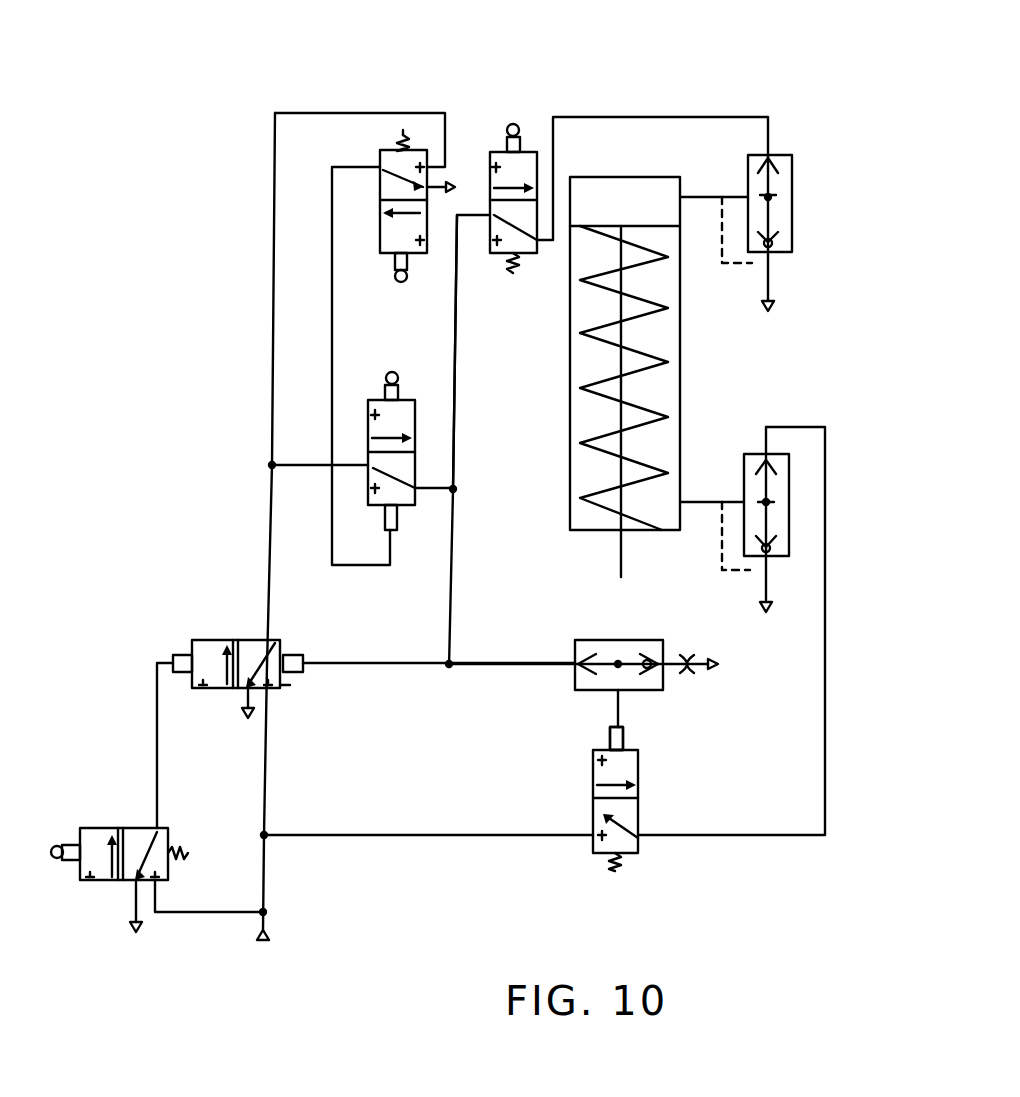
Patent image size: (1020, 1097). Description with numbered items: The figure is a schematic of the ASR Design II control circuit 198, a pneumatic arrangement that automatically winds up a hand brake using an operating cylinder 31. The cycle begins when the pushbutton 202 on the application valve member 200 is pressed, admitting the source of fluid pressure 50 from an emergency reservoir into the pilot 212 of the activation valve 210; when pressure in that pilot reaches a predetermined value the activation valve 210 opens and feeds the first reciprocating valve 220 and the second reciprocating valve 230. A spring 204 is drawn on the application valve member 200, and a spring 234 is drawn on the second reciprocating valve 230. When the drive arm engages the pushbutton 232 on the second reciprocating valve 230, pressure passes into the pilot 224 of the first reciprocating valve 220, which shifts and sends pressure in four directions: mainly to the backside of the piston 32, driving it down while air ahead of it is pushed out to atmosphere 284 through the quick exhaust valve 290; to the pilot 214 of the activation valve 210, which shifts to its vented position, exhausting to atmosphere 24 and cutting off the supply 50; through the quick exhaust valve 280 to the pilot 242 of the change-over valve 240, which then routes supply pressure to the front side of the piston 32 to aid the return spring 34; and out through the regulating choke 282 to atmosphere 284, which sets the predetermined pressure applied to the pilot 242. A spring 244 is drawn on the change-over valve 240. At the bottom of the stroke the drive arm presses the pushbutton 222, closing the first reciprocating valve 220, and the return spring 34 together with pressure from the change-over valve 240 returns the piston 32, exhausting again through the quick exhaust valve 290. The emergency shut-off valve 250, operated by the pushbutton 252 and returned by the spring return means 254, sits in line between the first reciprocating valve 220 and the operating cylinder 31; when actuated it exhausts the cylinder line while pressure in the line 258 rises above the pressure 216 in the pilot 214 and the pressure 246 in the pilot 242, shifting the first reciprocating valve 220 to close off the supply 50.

The pneumatic control circuit 198 is at (228, 124).
The second reciprocating valve means 230 is at (420, 186).
The pushbutton 232 is at (404, 282).
The return spring 234 is at (403, 133).
The shut-off valve 250 is at (538, 170).
The pushbutton 252 is at (513, 124).
The spring return means 254 is at (512, 275).
The line 258 is at (456, 362).
The operating cylinder 31 is at (680, 323).
The piston 32 is at (656, 225).
The return spring 34 is at (592, 388).
The first reciprocating valve means 220 is at (406, 506).
The pushbutton 222 is at (392, 372).
The pilot 224 is at (384, 518).
The quick exhaust valve 290 is at (795, 170).
The atmosphere 284 is at (775, 305).
The quick exhaust valve 280 is at (640, 640).
The choke 282 is at (687, 655).
The control valve means 240 is at (594, 775).
The pilot 242 is at (625, 736).
The return spring 244 is at (615, 872).
The pressure 246 is at (609, 740).
The activation valve 210 is at (248, 640).
The pilot 212 is at (178, 655).
The pilot 214 is at (294, 652).
The pressure 216 is at (290, 688).
The application valve member 200 is at (138, 828).
The pushbutton 202 is at (58, 845).
The return spring 204 is at (188, 850).
The atmosphere 24 is at (246, 716).
The source of fluid pressure 50 is at (267, 942).